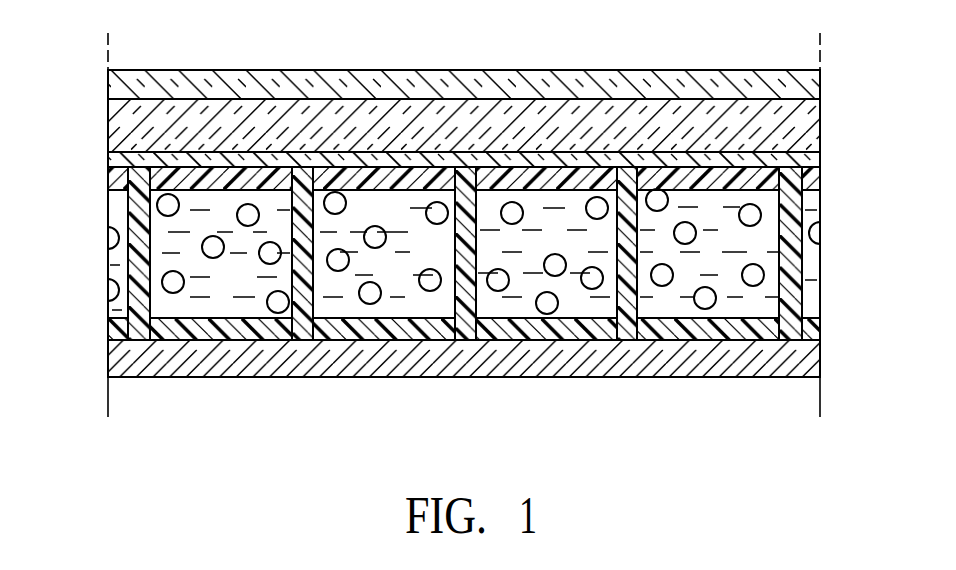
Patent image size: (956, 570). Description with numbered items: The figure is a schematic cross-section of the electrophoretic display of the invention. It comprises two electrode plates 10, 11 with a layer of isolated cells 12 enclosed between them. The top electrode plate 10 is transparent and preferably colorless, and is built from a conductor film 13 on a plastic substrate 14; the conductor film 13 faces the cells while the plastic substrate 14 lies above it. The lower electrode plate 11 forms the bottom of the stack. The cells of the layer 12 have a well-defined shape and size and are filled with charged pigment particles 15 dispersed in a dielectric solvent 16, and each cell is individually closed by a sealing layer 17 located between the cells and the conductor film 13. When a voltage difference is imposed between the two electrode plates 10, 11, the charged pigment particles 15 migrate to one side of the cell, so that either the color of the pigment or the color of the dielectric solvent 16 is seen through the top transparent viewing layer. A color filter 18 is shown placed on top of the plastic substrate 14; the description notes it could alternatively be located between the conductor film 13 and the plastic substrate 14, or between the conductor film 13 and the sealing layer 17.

The top electrode plate 10 is at (480, 107).
The electrode plate 11 is at (110, 365).
The layer of isolated cells 12 is at (464, 291).
The conductor film 13 is at (815, 158).
The plastic substrate 14 is at (810, 125).
The charged pigment particles 15 is at (368, 300).
The dielectric solvent 16 is at (403, 297).
The sealing layer 17 is at (813, 174).
The color filter 18 is at (810, 85).